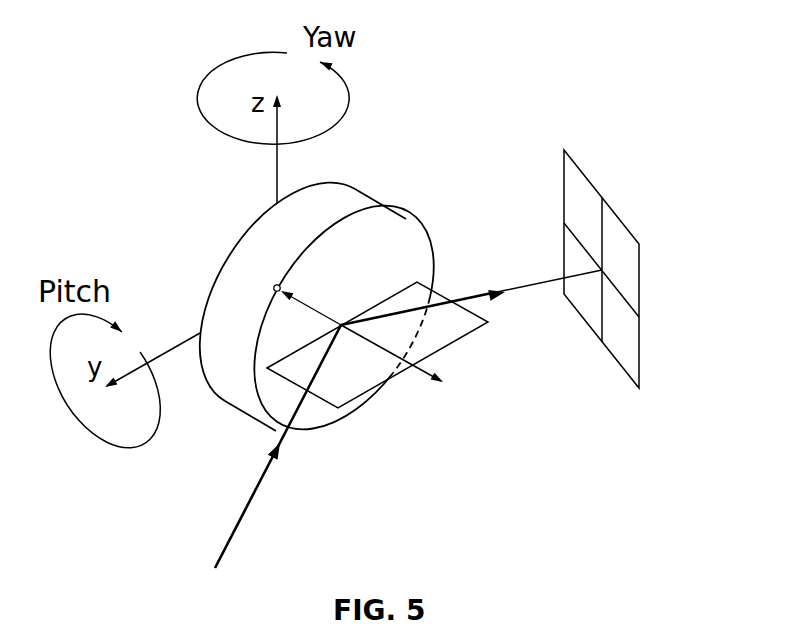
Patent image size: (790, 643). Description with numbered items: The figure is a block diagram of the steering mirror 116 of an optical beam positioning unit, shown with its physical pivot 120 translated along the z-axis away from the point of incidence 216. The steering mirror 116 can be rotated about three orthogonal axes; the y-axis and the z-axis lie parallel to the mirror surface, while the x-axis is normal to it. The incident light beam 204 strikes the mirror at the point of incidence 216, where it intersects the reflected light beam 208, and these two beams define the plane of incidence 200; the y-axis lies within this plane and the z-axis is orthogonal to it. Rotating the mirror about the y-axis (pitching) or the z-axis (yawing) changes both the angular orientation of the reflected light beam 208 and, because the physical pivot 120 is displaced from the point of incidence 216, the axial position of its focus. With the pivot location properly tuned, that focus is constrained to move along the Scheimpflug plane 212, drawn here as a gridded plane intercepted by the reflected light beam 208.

The steering mirror 116 is at (310, 248).
The physical pivot 120 is at (274, 284).
The plane of incidence 200 is at (453, 345).
The incident light beam 204 is at (227, 541).
The reflected light beam 208 is at (532, 283).
The Scheimpflug plane 212 is at (642, 275).
The point of incidence 216 is at (342, 322).